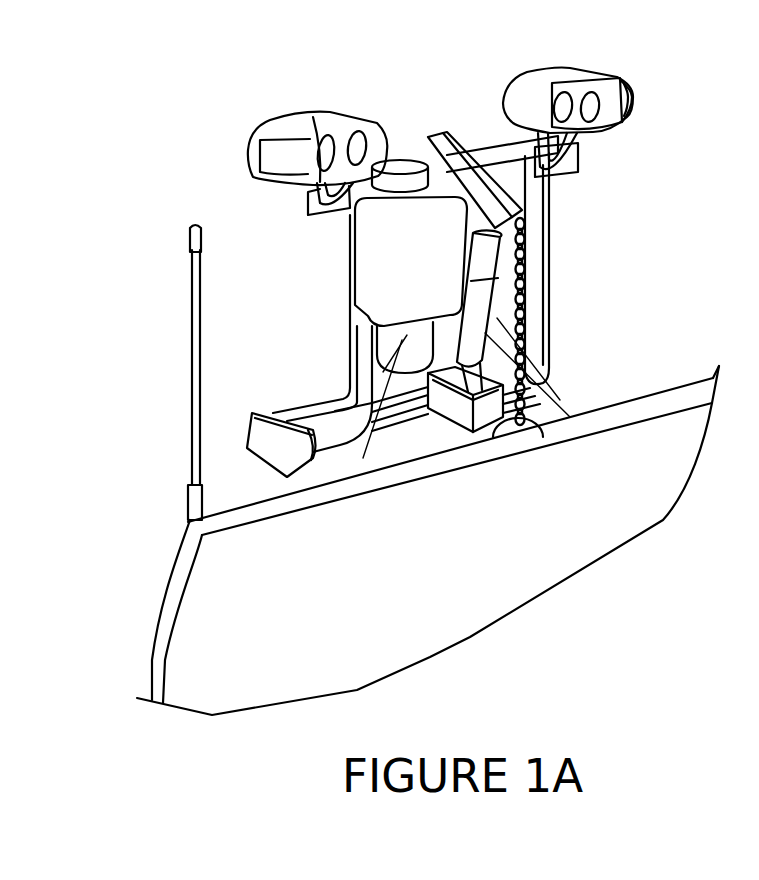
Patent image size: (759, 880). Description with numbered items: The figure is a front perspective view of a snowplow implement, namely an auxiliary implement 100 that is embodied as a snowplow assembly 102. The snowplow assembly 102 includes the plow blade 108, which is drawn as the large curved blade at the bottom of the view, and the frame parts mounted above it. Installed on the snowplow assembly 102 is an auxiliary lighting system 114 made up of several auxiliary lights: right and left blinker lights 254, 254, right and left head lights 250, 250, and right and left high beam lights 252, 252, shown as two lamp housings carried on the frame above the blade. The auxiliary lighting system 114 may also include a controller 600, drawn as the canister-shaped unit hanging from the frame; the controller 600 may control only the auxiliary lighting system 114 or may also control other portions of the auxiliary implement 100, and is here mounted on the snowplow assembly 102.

The auxiliary implement 100 is at (147, 294).
The snowplow assembly 102 is at (150, 465).
The plow blade 108 is at (199, 572).
The auxiliary lighting system 114 is at (152, 110).
The head lights 250 is at (357, 143).
The high beam lights 252 is at (326, 142).
The blinker lights 254 is at (278, 161).
The controller 600 is at (368, 262).